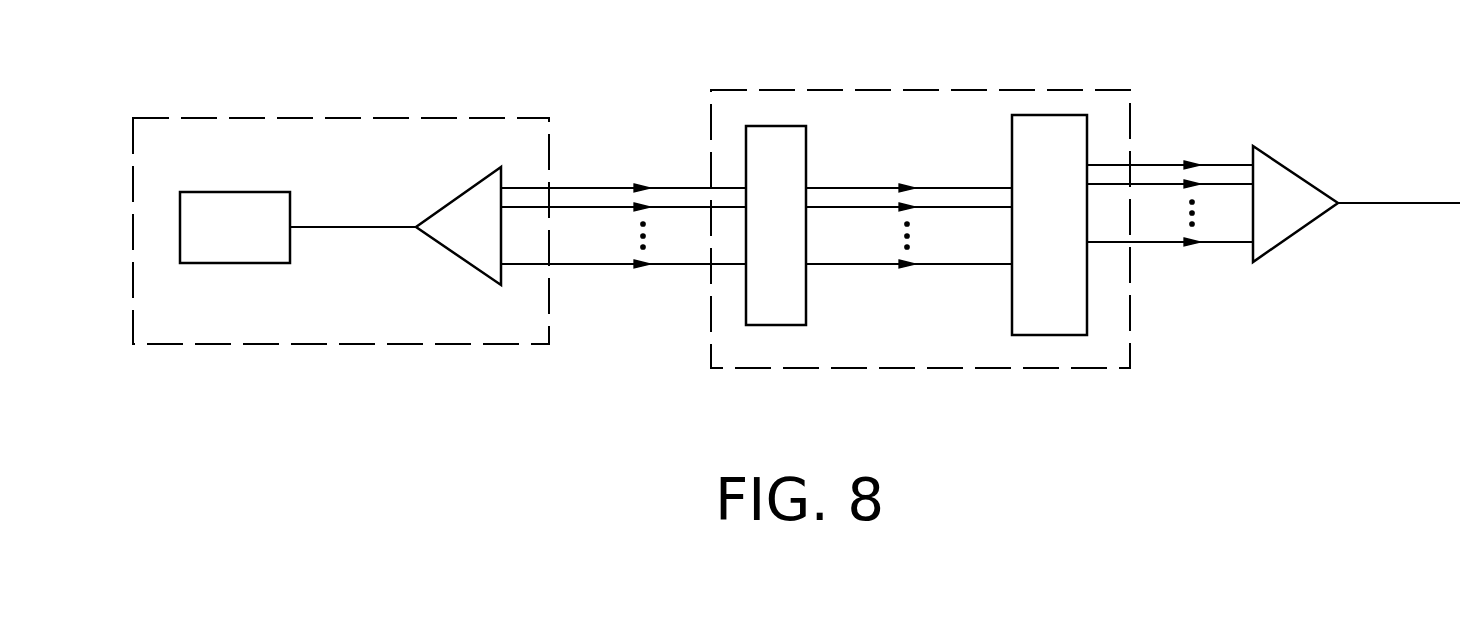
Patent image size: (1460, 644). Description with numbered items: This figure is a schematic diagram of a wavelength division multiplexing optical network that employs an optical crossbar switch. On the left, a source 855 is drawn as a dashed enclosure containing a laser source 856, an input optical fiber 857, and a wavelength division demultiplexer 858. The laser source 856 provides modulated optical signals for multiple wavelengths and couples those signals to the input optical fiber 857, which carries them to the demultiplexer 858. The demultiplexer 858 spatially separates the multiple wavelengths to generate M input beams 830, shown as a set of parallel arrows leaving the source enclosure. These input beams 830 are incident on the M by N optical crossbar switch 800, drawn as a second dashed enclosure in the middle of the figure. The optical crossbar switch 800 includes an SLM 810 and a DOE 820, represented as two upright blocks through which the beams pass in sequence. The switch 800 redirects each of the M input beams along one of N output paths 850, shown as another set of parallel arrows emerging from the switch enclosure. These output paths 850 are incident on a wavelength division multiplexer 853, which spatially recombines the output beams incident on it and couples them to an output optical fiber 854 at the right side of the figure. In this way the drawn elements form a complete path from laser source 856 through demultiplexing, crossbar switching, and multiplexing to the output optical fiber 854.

The optical crossbar switch 800 is at (898, 368).
The SLM 810 is at (806, 288).
The DOE 820 is at (1012, 288).
The input beams 830 is at (600, 160).
The output paths 850 is at (1191, 135).
The wavelength division multiplexer 853 is at (1293, 237).
The output optical fiber 854 is at (1382, 205).
The source 855 is at (365, 344).
The laser source 856 is at (253, 263).
The input optical fiber 857 is at (323, 228).
The wavelength division demultiplexer 858 is at (458, 263).